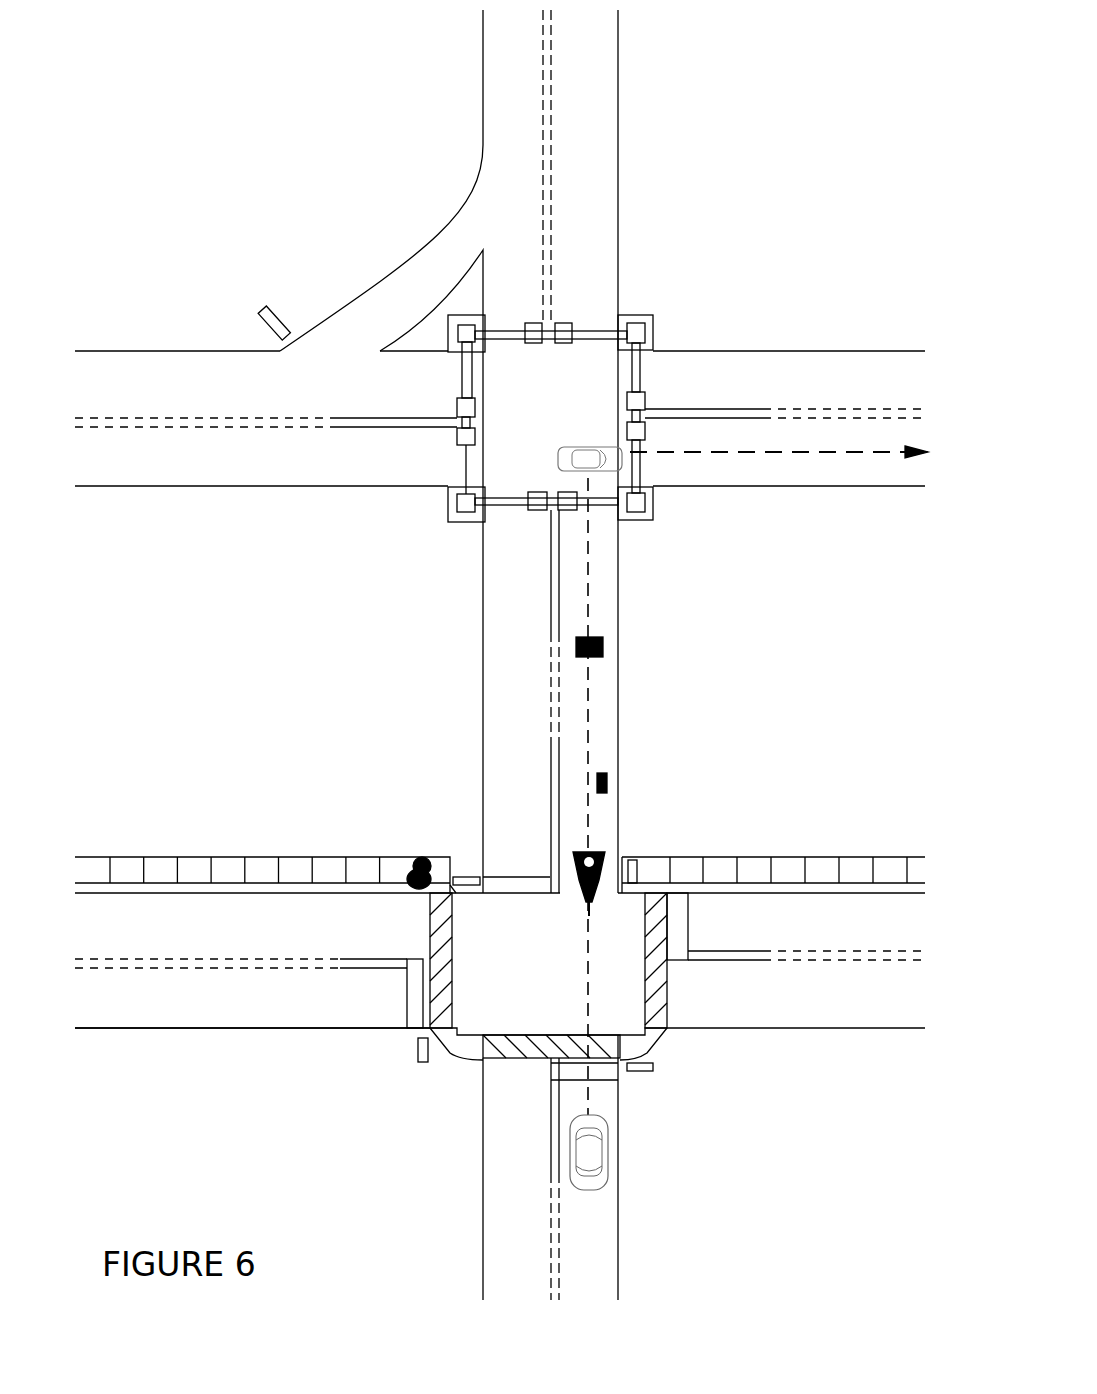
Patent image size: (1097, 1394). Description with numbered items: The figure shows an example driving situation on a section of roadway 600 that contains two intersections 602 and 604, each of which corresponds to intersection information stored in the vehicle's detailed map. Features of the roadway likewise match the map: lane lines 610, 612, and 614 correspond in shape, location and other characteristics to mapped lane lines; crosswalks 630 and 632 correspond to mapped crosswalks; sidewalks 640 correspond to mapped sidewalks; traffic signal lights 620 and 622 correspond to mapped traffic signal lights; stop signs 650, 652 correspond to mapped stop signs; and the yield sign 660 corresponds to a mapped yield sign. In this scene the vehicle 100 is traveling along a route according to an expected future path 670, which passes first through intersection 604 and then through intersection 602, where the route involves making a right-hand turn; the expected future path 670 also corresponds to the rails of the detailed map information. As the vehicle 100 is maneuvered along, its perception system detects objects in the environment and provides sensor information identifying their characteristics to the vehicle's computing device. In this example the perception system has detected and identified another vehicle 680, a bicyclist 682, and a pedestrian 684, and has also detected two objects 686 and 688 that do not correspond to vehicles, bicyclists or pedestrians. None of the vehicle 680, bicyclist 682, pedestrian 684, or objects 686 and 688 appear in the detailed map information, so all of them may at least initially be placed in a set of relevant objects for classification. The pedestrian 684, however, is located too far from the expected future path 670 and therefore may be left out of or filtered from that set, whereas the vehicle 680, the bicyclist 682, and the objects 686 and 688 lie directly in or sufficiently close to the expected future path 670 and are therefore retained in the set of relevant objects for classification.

The vehicle 100 is at (608, 1163).
The section of roadway 600 is at (197, 1225).
The intersection 602 is at (463, 438).
The intersection 604 is at (548, 1005).
The lane line 610 is at (148, 970).
The lane line 612 is at (223, 1029).
The lane line 614 is at (552, 115).
The traffic signal light 620 is at (455, 435).
The traffic signal light 622 is at (455, 402).
The crosswalk 630 is at (428, 1012).
The crosswalk 632 is at (667, 1015).
The sidewalks 640 is at (713, 858).
The stop sign 650 is at (467, 875).
The stop sign 652 is at (655, 1075).
The yield sign 660 is at (257, 320).
The expected future path 670 is at (590, 730).
The vehicle 680 is at (600, 437).
The bicyclist 682 is at (602, 857).
The pedestrian 684 is at (412, 870).
The object 686 is at (603, 650).
The object 688 is at (607, 782).